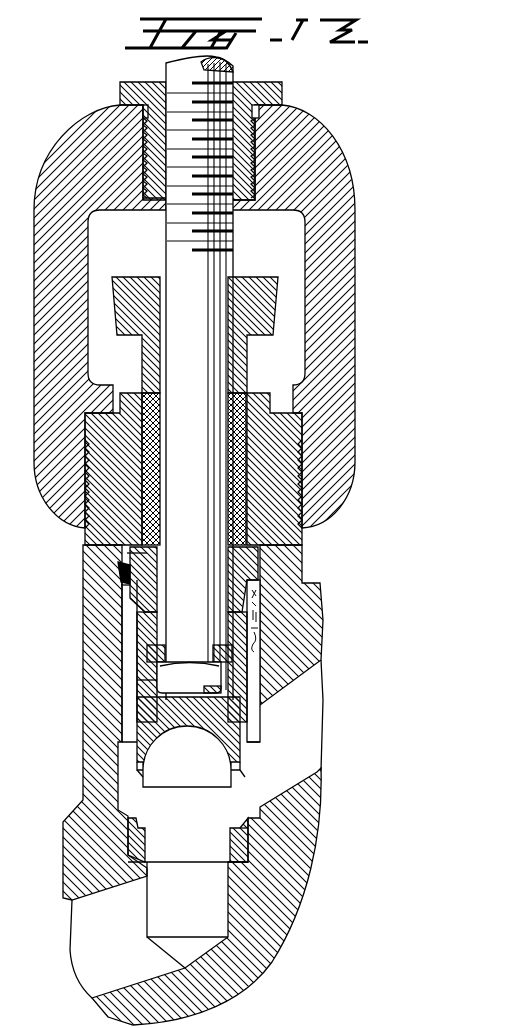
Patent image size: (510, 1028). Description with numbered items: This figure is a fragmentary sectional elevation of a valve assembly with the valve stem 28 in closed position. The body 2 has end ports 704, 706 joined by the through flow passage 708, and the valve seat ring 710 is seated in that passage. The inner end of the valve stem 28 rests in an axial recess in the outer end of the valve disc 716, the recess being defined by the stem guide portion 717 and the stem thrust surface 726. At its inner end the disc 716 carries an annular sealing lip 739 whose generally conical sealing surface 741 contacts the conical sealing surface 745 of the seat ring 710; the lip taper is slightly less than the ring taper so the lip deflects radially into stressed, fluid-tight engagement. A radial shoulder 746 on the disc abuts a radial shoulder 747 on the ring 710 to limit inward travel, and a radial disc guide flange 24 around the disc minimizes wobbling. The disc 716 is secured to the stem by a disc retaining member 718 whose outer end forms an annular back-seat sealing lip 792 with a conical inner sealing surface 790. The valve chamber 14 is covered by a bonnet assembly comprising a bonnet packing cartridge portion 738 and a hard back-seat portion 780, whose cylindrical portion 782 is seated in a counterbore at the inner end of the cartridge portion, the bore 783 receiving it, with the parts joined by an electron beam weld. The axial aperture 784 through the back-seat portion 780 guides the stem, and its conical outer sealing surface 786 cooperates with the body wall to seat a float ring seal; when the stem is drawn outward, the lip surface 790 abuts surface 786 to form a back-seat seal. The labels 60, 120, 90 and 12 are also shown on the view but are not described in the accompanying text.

The valve cap body 60 is at (31, 144).
The nut 120 is at (244, 125).
The valve stem 28 is at (200, 530).
The packing follower 90 is at (131, 262).
The bore 783 is at (158, 435).
The bonnet packing cartridge portion 738 is at (258, 529).
The valve body 12 is at (90, 633).
The valve chamber 14 is at (128, 653).
The end port 706 is at (312, 728).
The body 2 is at (247, 975).
The end port 704 is at (78, 956).
The through flow passage 708 is at (204, 913).
The ring sealing surface 745 is at (225, 835).
The ring radial shoulder 747 is at (239, 822).
The valve seat ring 710 is at (238, 858).
The axial aperture 784 is at (167, 560).
The disc sealing surface 790 is at (154, 600).
The back-seat portion 780 is at (138, 567).
The cylindrical portion 782 is at (147, 553).
The back-seat sealing surface 786 is at (122, 590).
The back-seat sealing lip 792 is at (139, 604).
The disc retaining member 718 is at (150, 627).
The stem guide portion 717 is at (148, 683).
The stem thrust surface 726 is at (191, 687).
The valve disc 716 is at (188, 722).
The annular sealing lip 739 is at (150, 777).
The disc sealing surface 741 is at (132, 780).
The disc radial shoulder 746 is at (246, 775).
The radial disc guide flange 24 is at (120, 738).